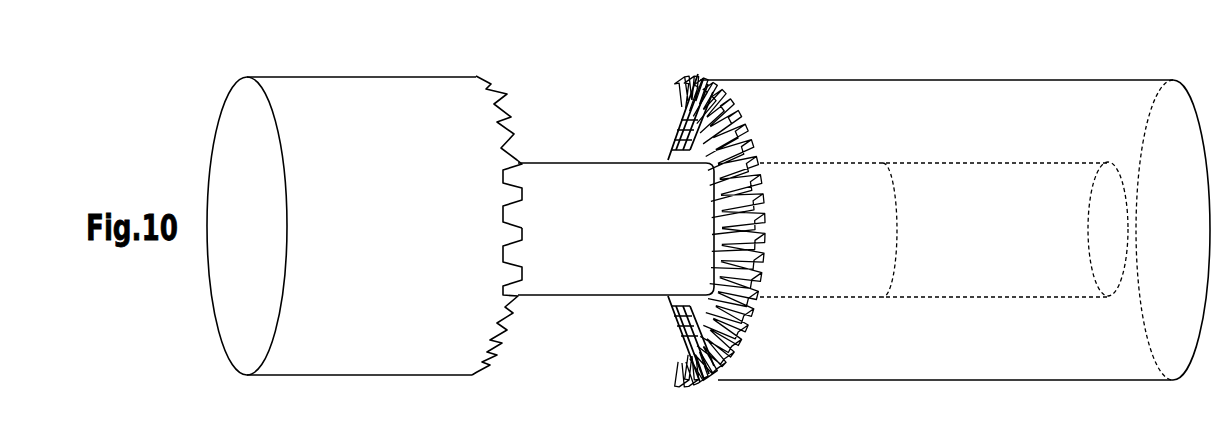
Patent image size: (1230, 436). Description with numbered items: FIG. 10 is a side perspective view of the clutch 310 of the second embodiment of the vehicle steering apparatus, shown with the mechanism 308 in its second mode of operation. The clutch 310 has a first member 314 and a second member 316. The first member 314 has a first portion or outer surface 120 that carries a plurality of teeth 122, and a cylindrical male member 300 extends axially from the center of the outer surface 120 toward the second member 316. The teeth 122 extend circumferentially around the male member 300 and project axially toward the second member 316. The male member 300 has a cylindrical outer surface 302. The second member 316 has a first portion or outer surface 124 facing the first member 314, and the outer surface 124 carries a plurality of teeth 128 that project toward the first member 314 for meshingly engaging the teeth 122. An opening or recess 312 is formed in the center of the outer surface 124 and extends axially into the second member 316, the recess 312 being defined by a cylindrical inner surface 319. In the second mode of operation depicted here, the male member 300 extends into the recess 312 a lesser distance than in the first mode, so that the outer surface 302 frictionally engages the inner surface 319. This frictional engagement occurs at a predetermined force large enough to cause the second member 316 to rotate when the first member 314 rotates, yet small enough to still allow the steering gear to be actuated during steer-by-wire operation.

The first portion or outer surface 120 is at (483, 352).
The teeth 122 is at (481, 84).
The first portion or outer surface 124 is at (688, 360).
The teeth 128 is at (715, 375).
The cylindrical male member 300 is at (580, 188).
The cylindrical outer surface 302 is at (865, 277).
The mechanism 308 is at (955, 220).
The clutch 310 is at (700, 76).
The opening or recess 312 is at (1053, 263).
The first member 314 is at (385, 113).
The second member 316 is at (822, 117).
The cylindrical inner surface 319 is at (1034, 292).